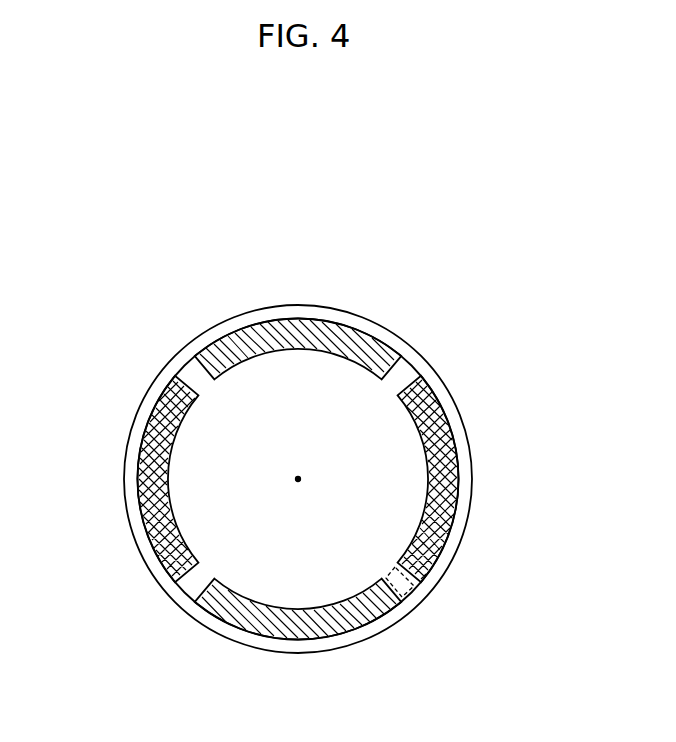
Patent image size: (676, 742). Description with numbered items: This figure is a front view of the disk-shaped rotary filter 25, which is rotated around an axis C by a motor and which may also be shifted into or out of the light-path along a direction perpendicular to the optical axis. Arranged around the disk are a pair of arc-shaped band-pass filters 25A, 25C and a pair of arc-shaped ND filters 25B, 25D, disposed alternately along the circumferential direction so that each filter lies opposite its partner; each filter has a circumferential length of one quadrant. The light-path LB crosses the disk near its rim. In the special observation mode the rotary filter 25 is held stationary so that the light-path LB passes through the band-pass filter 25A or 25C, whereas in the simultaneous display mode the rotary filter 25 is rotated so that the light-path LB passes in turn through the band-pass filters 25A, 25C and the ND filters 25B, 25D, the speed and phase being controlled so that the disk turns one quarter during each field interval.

The rotary filter 25 is at (389, 317).
The band-pass filter 25A is at (302, 318).
The ND filter 25B is at (140, 476).
The band-pass filter 25C is at (296, 641).
The ND filter 25D is at (452, 528).
The axis C is at (299, 479).
The light-path LB is at (402, 597).